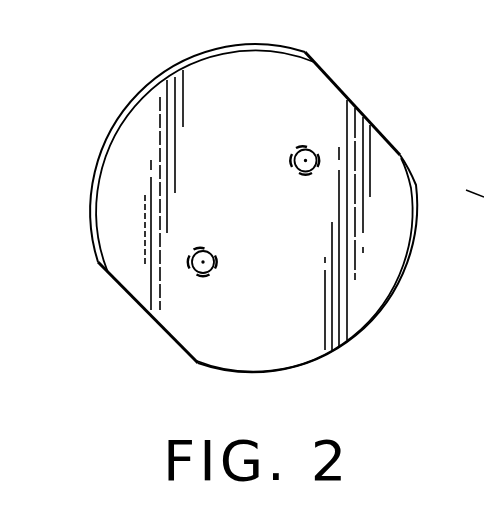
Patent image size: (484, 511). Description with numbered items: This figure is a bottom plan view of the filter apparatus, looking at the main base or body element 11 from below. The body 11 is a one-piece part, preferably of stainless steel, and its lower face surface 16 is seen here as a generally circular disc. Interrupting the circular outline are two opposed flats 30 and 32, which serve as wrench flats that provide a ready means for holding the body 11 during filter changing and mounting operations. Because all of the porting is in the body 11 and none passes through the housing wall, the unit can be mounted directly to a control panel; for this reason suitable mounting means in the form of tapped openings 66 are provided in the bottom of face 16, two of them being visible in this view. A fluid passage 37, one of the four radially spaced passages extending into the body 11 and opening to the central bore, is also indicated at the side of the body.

The main base or body element 11 is at (103, 141).
The lower face surface 16 is at (368, 288).
The flat 30 is at (340, 92).
The flat 32 is at (160, 328).
The tapped openings 66 is at (317, 152).
The fluid passage 37 is at (471, 180).